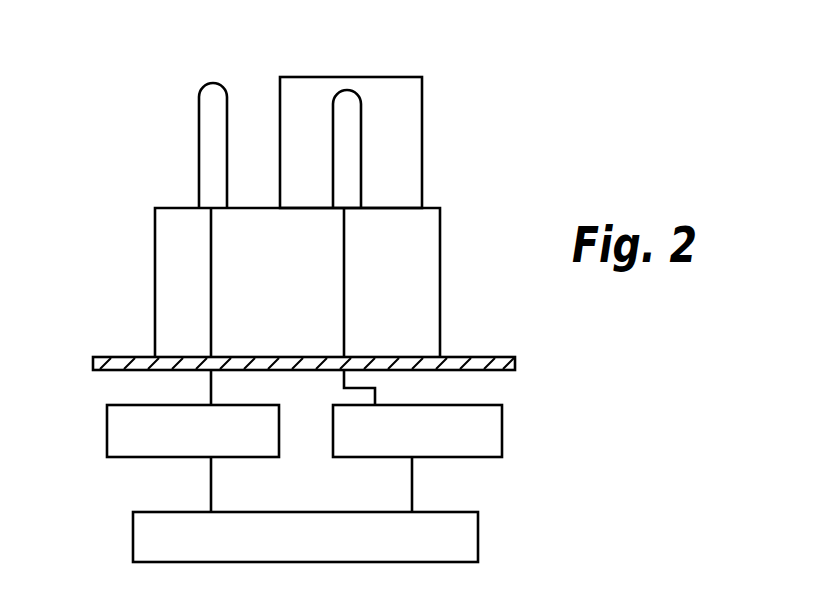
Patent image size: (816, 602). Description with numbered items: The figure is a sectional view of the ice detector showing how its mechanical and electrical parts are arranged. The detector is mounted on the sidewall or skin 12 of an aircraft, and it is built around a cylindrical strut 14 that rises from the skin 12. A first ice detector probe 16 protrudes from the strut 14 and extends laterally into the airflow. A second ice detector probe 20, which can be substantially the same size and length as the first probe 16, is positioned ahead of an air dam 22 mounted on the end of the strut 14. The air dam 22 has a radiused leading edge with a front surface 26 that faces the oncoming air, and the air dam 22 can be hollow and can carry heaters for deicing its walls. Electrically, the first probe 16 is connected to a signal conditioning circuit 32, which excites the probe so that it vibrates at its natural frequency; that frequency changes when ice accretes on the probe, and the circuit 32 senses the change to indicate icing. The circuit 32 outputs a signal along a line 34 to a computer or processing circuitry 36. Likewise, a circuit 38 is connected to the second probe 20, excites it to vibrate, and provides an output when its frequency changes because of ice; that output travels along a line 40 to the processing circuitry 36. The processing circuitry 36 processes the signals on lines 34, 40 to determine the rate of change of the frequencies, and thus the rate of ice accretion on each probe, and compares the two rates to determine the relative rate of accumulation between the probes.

The skin 12 is at (468, 357).
The cylindrical strut 14 is at (430, 249).
The first ice detector probe 16 is at (208, 108).
The second ice detector probe 20 is at (362, 172).
The air dam 22 is at (385, 78).
The front surface 26 is at (400, 122).
The signal conditioning circuit 32 is at (107, 413).
The line 34 is at (209, 482).
The processing circuitry 36 is at (133, 533).
The circuit 38 is at (472, 405).
The line 40 is at (413, 478).